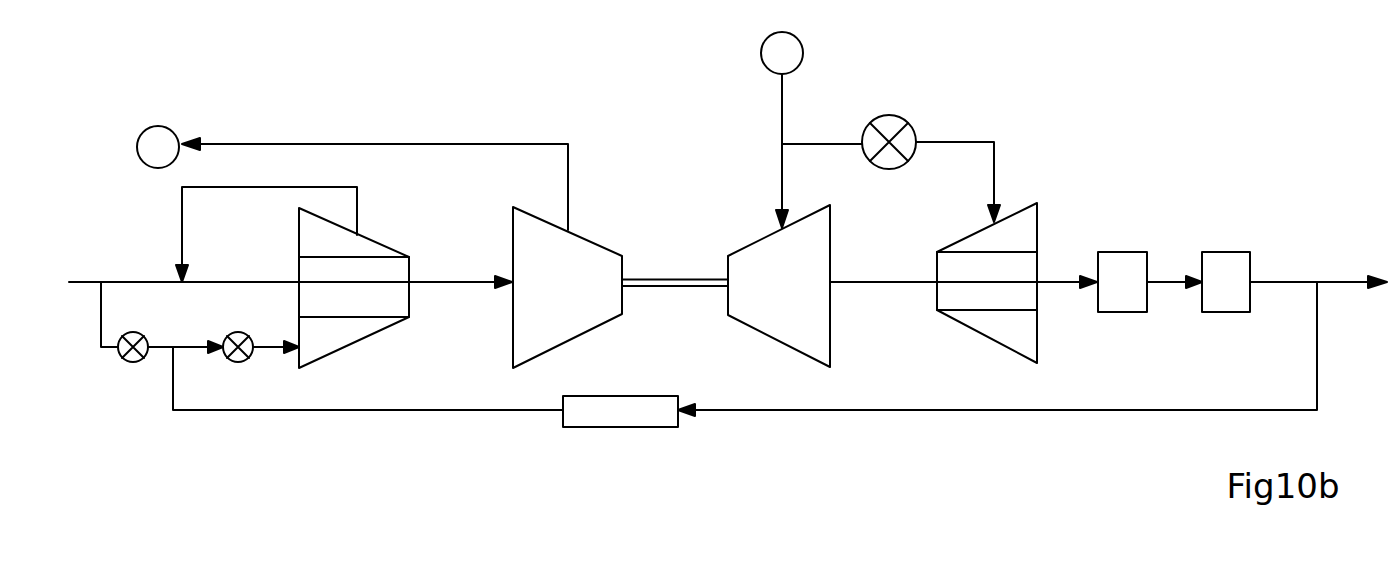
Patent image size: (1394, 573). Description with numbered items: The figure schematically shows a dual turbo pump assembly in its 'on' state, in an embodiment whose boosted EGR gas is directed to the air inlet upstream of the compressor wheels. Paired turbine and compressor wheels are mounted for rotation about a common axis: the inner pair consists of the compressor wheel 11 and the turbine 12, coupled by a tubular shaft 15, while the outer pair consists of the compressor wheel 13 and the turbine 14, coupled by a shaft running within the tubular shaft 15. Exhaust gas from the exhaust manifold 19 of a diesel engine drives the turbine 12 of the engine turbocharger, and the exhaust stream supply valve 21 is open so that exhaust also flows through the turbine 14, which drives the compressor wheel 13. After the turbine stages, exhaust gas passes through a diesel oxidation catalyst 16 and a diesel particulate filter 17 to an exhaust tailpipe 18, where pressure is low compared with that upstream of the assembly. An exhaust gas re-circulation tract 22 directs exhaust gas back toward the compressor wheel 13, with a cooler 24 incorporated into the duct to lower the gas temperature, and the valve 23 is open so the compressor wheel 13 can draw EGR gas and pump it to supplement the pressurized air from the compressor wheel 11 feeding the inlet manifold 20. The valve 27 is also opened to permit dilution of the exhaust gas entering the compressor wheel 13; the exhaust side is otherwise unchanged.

The compressor wheel 11 is at (607, 250).
The turbine 12 is at (755, 238).
The compressor wheel 13 is at (392, 247).
The turbine 14 is at (1035, 180).
The tubular shaft 15 is at (688, 278).
The diesel oxidation catalyst 16 is at (1135, 254).
The diesel particulate filter 17 is at (1233, 254).
The exhaust tailpipe 18 is at (1342, 280).
The exhaust manifold 19 is at (811, 130).
The inlet manifold 20 is at (352, 178).
The exhaust stream supply valve 21 is at (930, 98).
The exhaust gas re-circulation tract 22 is at (977, 411).
The valve 23 is at (226, 331).
The cooler 24 is at (640, 419).
The valve 27 is at (125, 360).